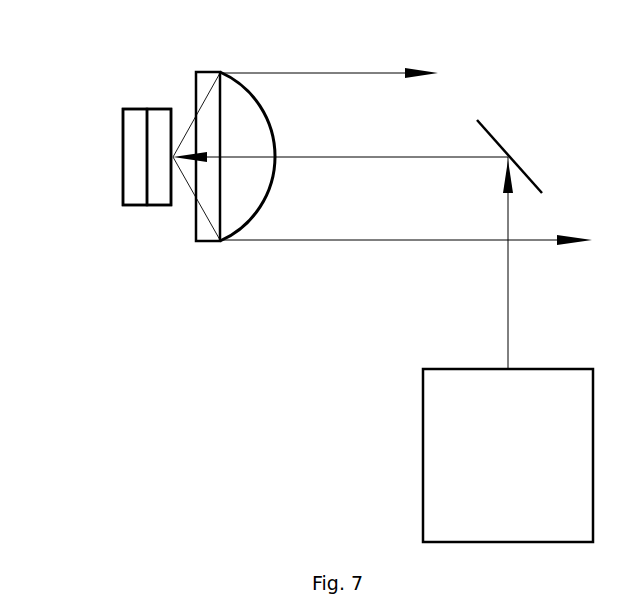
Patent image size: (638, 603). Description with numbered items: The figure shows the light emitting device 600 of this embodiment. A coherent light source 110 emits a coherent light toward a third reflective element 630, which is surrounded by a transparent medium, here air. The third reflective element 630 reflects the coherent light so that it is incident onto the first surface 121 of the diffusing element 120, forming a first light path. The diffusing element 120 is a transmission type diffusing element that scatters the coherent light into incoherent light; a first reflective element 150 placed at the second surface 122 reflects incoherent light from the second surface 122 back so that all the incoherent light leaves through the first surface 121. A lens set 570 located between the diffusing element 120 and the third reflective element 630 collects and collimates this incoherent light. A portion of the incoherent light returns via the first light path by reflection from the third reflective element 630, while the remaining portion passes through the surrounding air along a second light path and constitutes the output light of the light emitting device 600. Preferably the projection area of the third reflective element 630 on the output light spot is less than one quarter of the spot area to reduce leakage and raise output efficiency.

The light emitting device 600 is at (310, 193).
The first reflective element 150 is at (137, 102).
The second surface 122 is at (145, 137).
The first surface 121 is at (171, 180).
The diffusing element 120 is at (158, 102).
The lens set 570 is at (207, 243).
The third reflective element 630 is at (508, 143).
The coherent light source 110 is at (417, 463).